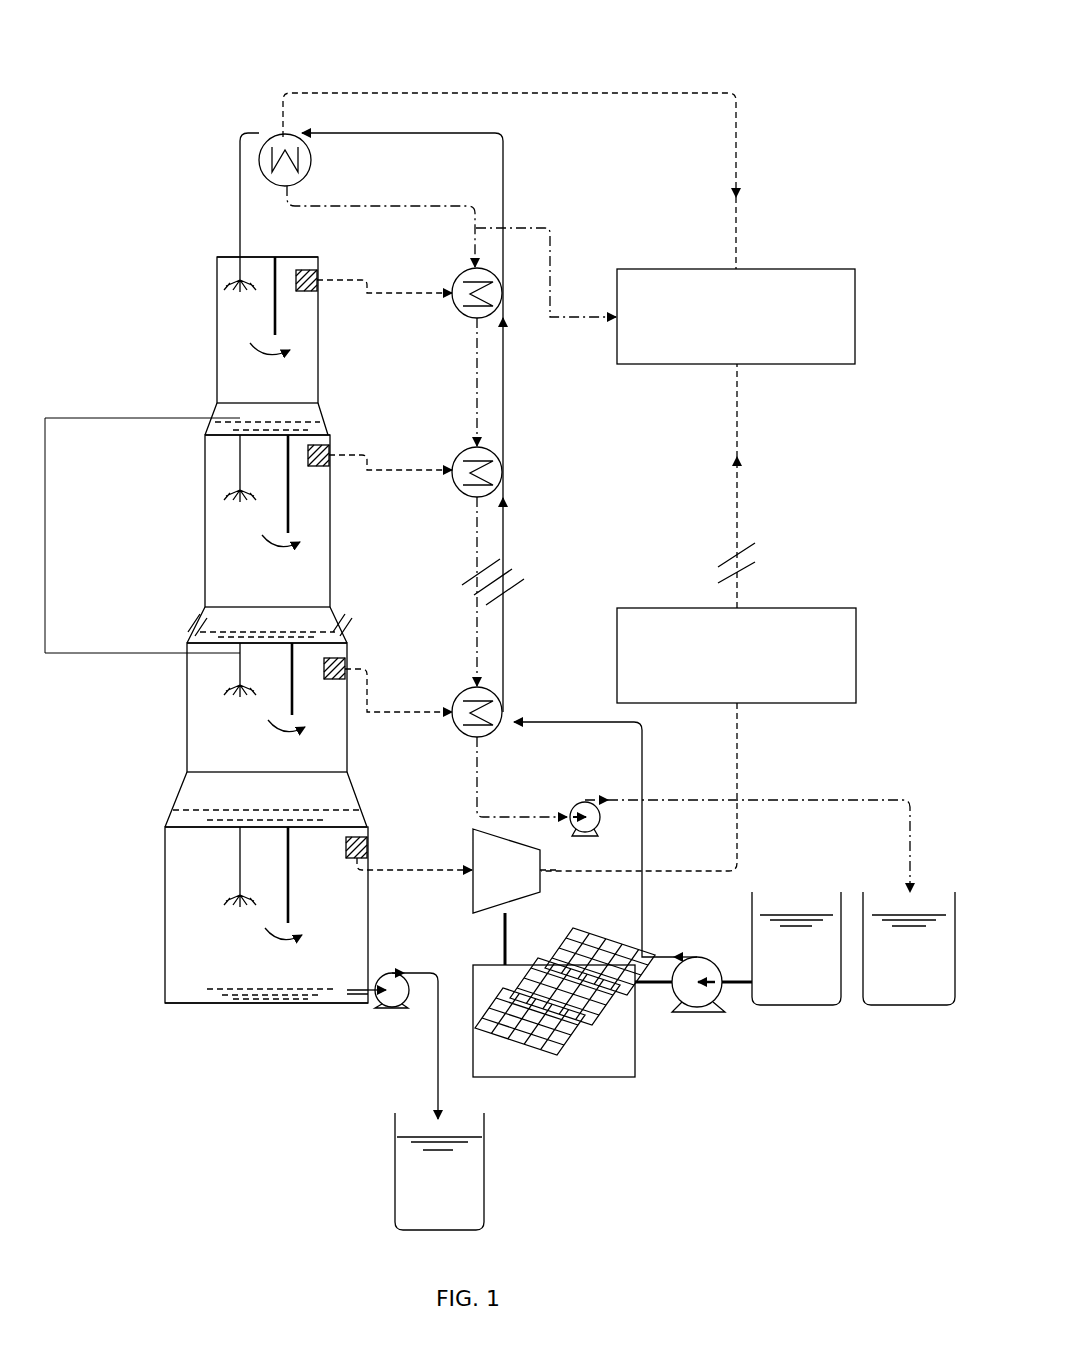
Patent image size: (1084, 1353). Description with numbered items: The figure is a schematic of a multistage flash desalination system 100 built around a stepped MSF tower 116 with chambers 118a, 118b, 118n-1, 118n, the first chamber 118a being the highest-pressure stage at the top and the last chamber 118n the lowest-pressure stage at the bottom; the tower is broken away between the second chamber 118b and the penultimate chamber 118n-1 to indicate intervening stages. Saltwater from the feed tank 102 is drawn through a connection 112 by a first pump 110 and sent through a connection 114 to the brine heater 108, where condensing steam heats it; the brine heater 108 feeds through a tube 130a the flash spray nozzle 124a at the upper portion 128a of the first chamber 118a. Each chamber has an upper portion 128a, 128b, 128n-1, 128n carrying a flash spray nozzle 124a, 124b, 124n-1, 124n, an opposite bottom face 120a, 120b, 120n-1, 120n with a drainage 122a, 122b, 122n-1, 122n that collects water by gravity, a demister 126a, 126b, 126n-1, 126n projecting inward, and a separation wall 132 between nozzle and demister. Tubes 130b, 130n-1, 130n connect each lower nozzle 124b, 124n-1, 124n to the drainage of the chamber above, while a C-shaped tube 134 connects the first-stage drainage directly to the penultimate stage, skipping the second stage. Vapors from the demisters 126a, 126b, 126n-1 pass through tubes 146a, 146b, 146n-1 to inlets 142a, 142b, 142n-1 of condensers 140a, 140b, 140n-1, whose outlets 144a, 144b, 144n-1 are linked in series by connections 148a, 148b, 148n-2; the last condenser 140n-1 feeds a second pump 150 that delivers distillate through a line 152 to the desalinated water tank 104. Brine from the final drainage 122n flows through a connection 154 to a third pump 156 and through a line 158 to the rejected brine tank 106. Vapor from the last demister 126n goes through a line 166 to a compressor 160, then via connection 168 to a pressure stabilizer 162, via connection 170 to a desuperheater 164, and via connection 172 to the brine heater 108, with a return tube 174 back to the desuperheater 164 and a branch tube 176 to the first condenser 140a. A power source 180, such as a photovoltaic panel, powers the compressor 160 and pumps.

The multistage flash desalination system 100 is at (806, 30).
The feed tank 102 is at (795, 1005).
The desalinated water tank 104 is at (910, 1005).
The rejected brine tank 106 is at (395, 1167).
The brine heater 108 is at (283, 137).
The first pump 110 is at (685, 1012).
The fluid connection between feed tank and first pump 112 is at (737, 985).
The fluid connection between first pump and brine heater 114 is at (642, 887).
The MSF tower 116 is at (170, 232).
The first chamber 118a is at (217, 332).
The second chamber 118b is at (205, 535).
The penultimate chamber 118n-1 is at (187, 736).
The last chamber 118n is at (165, 935).
The bottom face of first chamber 120a is at (312, 401).
The bottom face of second chamber 120b is at (330, 603).
The bottom face of penultimate chamber 120n-1 is at (347, 770).
The bottom face of last chamber 120n is at (180, 1003).
The drainage of first chamber 122a is at (320, 425).
The drainage of second chamber 122b is at (337, 633).
The drainage of penultimate chamber 122n-1 is at (362, 818).
The drainage of last chamber 122n is at (270, 1003).
The flash spray nozzle of first chamber 124a is at (215, 285).
The flash spray nozzle of second chamber 124b is at (218, 492).
The flash spray nozzle of penultimate chamber 124n-1 is at (218, 690).
The flash spray nozzle of last chamber 124n is at (220, 897).
The demister of first chamber 126a is at (317, 280).
The demister of second chamber 126b is at (324, 458).
The demister of penultimate chamber 126n-1 is at (348, 660).
The demister of last chamber 126n is at (367, 842).
The upper portion of first chamber 128a is at (227, 257).
The upper portion of second chamber 128b is at (205, 430).
The upper portion of penultimate chamber 128n-1 is at (195, 635).
The upper portion of last chamber 128n is at (200, 822).
The fluid connection between brine heater and first flash spray nozzle 130a is at (240, 170).
The fluid connection to second flash spray nozzle 130b is at (240, 462).
The fluid connection to penultimate flash spray nozzle 130n-1 is at (240, 660).
The fluid connection to last flash spray nozzle 130n is at (240, 848).
The separation wall 132 is at (285, 337).
The tube connecting top-half drainage to bottom-half flash spray nozzle 134 is at (70, 418).
The first condenser 140a is at (504, 290).
The second condenser 140b is at (503, 472).
The last condenser 140n-1 is at (505, 705).
The inlet of first condenser 142a is at (450, 290).
The inlet of second condenser 142b is at (452, 468).
The inlet of last condenser 142n-1 is at (452, 710).
The outlet of first condenser 144a is at (480, 322).
The outlet of second condenser 144b is at (480, 500).
The outlet of last condenser 144n-1 is at (480, 740).
The tube between first demister and first condenser 146a is at (425, 295).
The tube between second demister and second condenser 146b is at (430, 473).
The tube between penultimate demister and last condenser 146n-1 is at (405, 710).
The fluid connection between first and second condensers 148a is at (480, 360).
The fluid connection from second condenser 148b is at (480, 535).
The fluid connection to last condenser 148n-2 is at (480, 607).
The second pump 150 is at (585, 800).
The fluid connection between second pump and desalinated water tank 152 is at (890, 800).
The fluid connection between last drainage and third pump 154 is at (350, 997).
The third pump 156 is at (395, 1010).
The fluid connection between third pump and rejected brine tank 158 is at (437, 1093).
The compressor 160 is at (522, 903).
The pressure stabilizer 162 is at (856, 658).
The desuperheater 164 is at (855, 320).
The fluid connection between last demister and compressor 166 is at (452, 875).
The fluid connection between compressor and pressure stabilizer 168 is at (737, 758).
The fluid connection between pressure stabilizer and desuperheater 170 is at (737, 425).
The fluid connection between desuperheater and brine heater 172 is at (736, 150).
The return tube from brine heater to desuperheater 174 is at (367, 205).
The branch tube to first condenser 176 is at (478, 228).
The power source 180 is at (575, 1077).